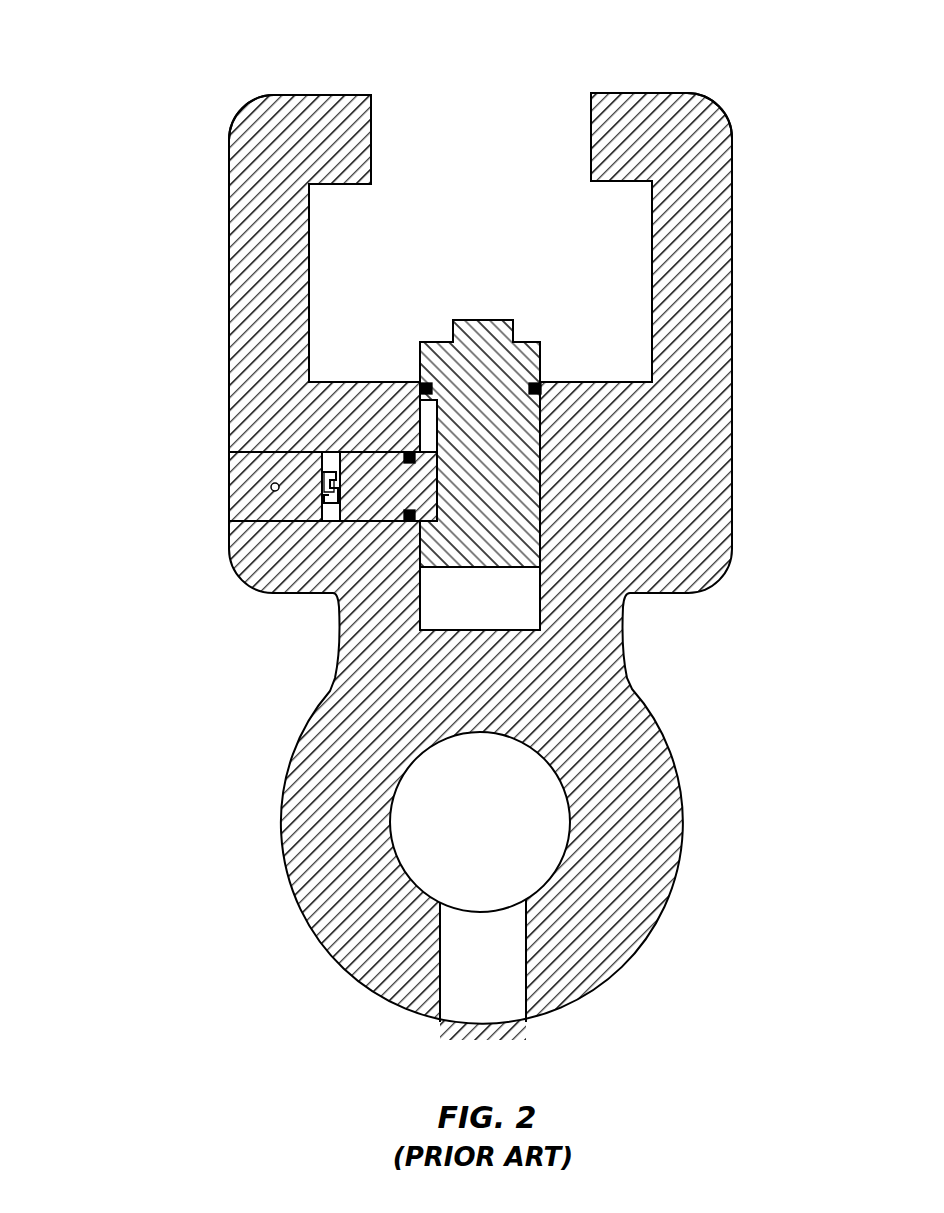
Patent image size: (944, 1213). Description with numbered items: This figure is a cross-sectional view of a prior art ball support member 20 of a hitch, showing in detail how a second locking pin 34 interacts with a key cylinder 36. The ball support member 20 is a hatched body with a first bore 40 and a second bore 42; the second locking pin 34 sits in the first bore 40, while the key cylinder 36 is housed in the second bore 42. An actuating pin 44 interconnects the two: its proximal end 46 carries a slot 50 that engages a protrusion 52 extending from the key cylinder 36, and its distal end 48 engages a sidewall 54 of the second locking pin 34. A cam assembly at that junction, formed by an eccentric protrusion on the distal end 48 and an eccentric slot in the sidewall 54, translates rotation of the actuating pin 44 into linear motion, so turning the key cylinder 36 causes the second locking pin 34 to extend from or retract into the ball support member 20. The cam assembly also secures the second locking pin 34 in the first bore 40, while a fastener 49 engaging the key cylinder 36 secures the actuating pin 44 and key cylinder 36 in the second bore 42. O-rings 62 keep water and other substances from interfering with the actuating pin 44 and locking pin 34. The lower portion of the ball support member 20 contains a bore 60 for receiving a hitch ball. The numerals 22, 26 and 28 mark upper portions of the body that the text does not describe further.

The ball support member 20 is at (170, 132).
The body 22 is at (255, 361).
The arms 26 is at (328, 110).
The cavity 28 is at (474, 259).
The second locking pin 34 is at (525, 340).
The key cylinder 36 is at (229, 522).
The first bore 40 is at (543, 452).
The second bore 42 is at (330, 450).
The actuating pin 44 is at (350, 522).
The proximal end 46 is at (245, 515).
The distal end 48 is at (437, 473).
The fastener 49 is at (272, 488).
The slot 50 is at (243, 469).
The protrusion 52 is at (323, 472).
The sidewall 54 is at (420, 418).
The bore 60 is at (570, 842).
The O-rings 62 is at (540, 388).